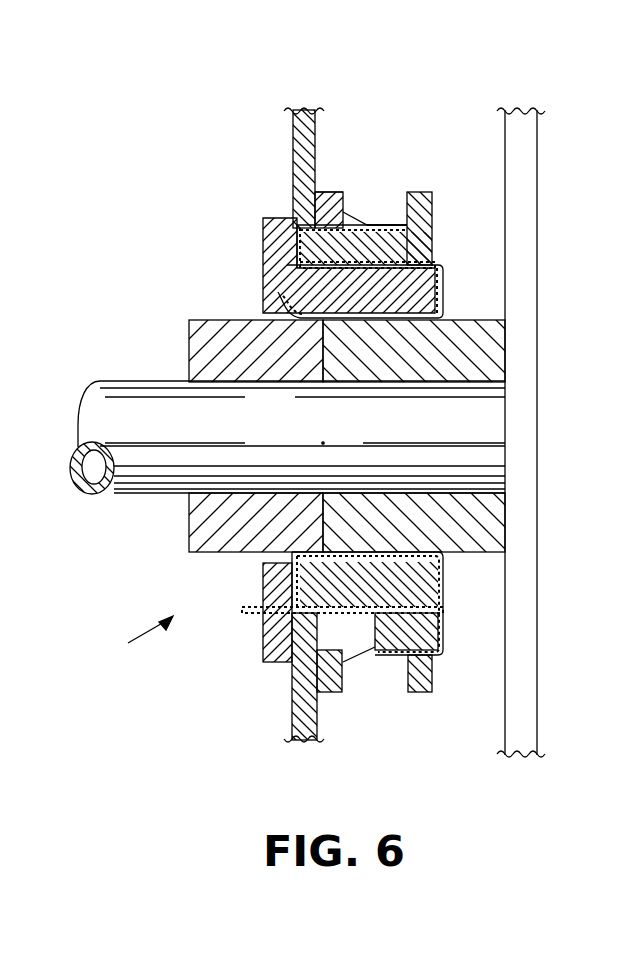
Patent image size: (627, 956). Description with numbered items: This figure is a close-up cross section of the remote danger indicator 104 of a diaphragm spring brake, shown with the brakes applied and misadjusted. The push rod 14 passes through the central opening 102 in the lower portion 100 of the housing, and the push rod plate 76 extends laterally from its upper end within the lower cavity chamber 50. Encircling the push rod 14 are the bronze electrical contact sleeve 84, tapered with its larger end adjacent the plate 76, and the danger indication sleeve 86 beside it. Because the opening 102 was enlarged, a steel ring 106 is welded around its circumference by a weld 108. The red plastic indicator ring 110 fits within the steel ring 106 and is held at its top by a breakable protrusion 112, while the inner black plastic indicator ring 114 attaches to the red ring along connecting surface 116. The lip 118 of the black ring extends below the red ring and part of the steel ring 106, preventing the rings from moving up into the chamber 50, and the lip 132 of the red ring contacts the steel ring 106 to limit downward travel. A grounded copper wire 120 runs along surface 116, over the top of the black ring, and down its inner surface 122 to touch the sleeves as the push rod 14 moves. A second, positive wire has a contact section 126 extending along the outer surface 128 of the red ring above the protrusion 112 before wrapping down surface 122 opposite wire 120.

The push rod 14 is at (165, 437).
The lower cavity chamber 50 is at (393, 127).
The push rod plate 76 is at (520, 575).
The electrical contact sleeve 84 is at (462, 538).
The danger indication sleeve 86 is at (189, 533).
The lower portion of lower housing assembly 100 is at (293, 148).
The central opening 102 is at (295, 212).
The remote danger indicator 104 is at (125, 637).
The steel ring 106 is at (370, 222).
The weld 108 is at (320, 195).
The red plastic indicator ring 110 is at (385, 222).
The breakable protrusion 112 is at (362, 222).
The inner black plastic indicator ring 114 is at (262, 245).
The connecting surface 116 is at (412, 253).
The lip of ring 114 118 is at (278, 218).
The copper wire 120 is at (447, 300).
The inner surface of ring 114 122 is at (330, 350).
The contact section 126 is at (375, 652).
The outer surface of ring 110 128 is at (372, 655).
The lip of ring 110 132 is at (433, 680).